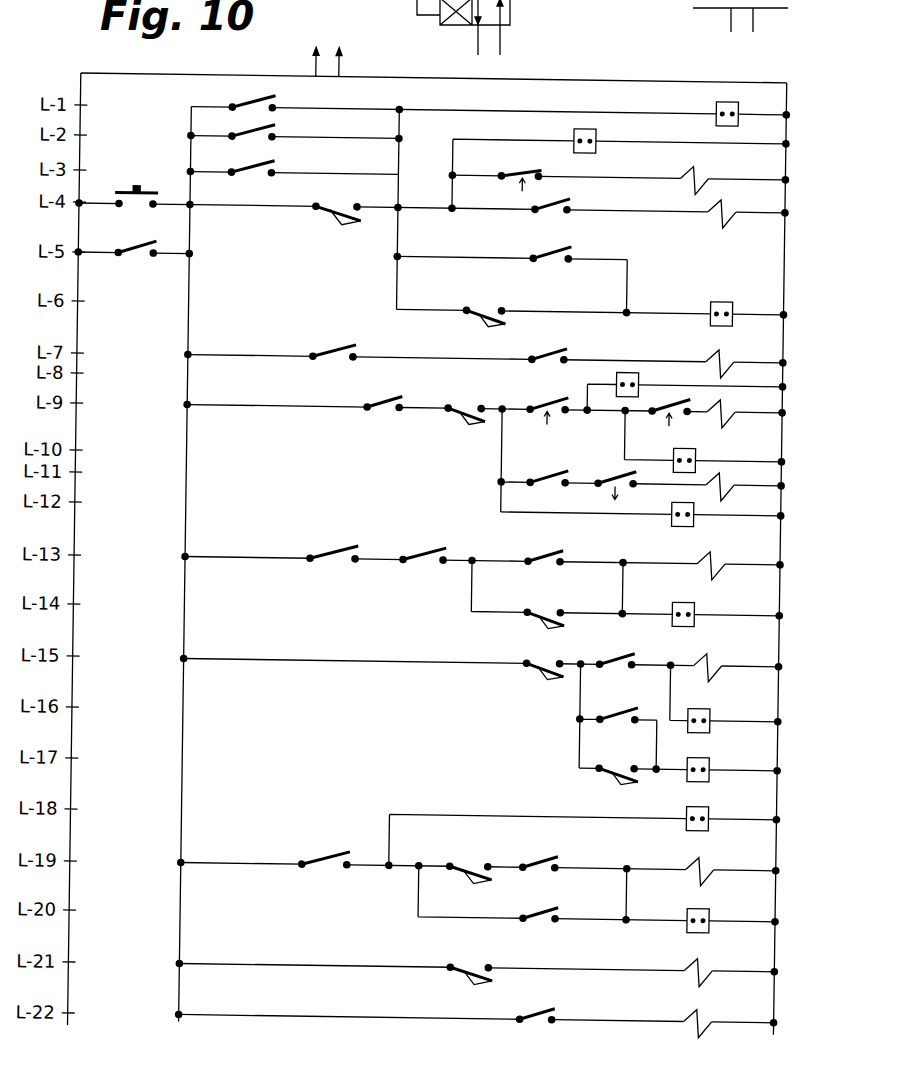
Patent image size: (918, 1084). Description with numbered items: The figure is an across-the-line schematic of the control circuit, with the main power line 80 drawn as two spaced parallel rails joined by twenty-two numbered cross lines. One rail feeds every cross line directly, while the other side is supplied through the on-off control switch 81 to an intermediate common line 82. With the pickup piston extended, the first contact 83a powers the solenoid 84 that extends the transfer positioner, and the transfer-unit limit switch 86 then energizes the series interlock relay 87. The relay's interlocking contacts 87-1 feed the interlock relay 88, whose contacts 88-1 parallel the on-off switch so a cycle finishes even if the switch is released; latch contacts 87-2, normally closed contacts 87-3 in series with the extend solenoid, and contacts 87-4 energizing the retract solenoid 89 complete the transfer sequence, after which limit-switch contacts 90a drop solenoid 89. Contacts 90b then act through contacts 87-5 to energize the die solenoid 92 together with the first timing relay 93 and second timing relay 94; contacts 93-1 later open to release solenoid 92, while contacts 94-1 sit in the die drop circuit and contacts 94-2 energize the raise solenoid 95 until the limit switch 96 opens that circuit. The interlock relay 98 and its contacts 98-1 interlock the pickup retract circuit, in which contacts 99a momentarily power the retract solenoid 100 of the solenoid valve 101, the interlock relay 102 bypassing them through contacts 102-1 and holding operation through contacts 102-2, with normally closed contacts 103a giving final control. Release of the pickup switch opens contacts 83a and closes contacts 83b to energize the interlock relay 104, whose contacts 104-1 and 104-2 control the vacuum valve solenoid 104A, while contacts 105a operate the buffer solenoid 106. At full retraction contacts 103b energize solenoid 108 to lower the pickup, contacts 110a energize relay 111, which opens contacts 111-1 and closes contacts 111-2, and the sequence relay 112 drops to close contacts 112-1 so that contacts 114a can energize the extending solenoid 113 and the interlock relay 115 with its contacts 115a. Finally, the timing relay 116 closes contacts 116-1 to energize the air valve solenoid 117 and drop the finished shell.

The main power line 80 is at (433, 77).
The on-off control switch 81 is at (147, 188).
The intermediate common line 82 is at (192, 302).
The first contact of limit switch 83 83a is at (345, 215).
The second set of contacts of limit switch 83 83b is at (333, 862).
The solenoid 84 is at (722, 222).
The limit switch 86 is at (500, 302).
The series interlock relay 87 is at (712, 297).
The first set of normally open interlocking contacts 87-1 is at (270, 172).
The normally open latch contacts 87-2 is at (569, 250).
The normally closed contacts 87-3 is at (568, 200).
The fourth set of normally open contacts 87-4 is at (568, 353).
The normally closed contacts 87-5 is at (400, 397).
The interlock relay 88 is at (714, 98).
The normally open interlock contacts 88-1 is at (134, 257).
The solenoid 89 is at (718, 345).
The first set of contacts of limit switch 90 90a is at (360, 350).
The normally open limit switch contacts 90b is at (462, 401).
The first solenoid 92 is at (727, 418).
The first timing relay 93 is at (642, 371).
The first set of normally closed contacts 93-1 is at (665, 418).
The second timing relay 94 is at (702, 514).
The first set of normally closed contacts 94-1 is at (556, 418).
The second set of normally open contacts 94-2 is at (621, 490).
The raise solenoid 95 is at (727, 486).
The limit switch 96 is at (546, 477).
The interlock relay 98 is at (701, 451).
The contacts 98-1 is at (440, 563).
The set of contacts 99a is at (562, 605).
The retract solenoid 100 is at (711, 560).
The solenoid valve 101 is at (777, 10).
The interlock relay 102 is at (700, 602).
The contacts 102-1 is at (561, 546).
The interlock contacts 102-2 is at (272, 108).
The normally closed contacts 103a is at (354, 549).
The set of contacts 103b is at (552, 670).
The interlock relay 104 is at (695, 821).
The interlock contacts 104-1 is at (272, 138).
The normally open contacts 104-2 is at (578, 991).
The vacuum valve solenoid 104A is at (708, 1008).
The contacts 105a is at (469, 957).
The solenoid 106 is at (702, 957).
The solenoid 108 is at (725, 673).
The set of contacts 110a is at (628, 762).
The relay 111 is at (717, 757).
The set of contacts 111-1 is at (639, 656).
The set of interlock contacts 111-2 is at (644, 702).
The sequence relay 112 is at (717, 708).
The set of normally closed contacts 112-1 is at (552, 866).
The solenoid 113 is at (718, 852).
The contacts 114a is at (475, 858).
The interlock relay 115 is at (697, 900).
The set of interlock contacts 115a is at (555, 916).
The timing relay 116 is at (596, 145).
The contacts 116-1 is at (522, 164).
The solenoid 117 is at (697, 168).